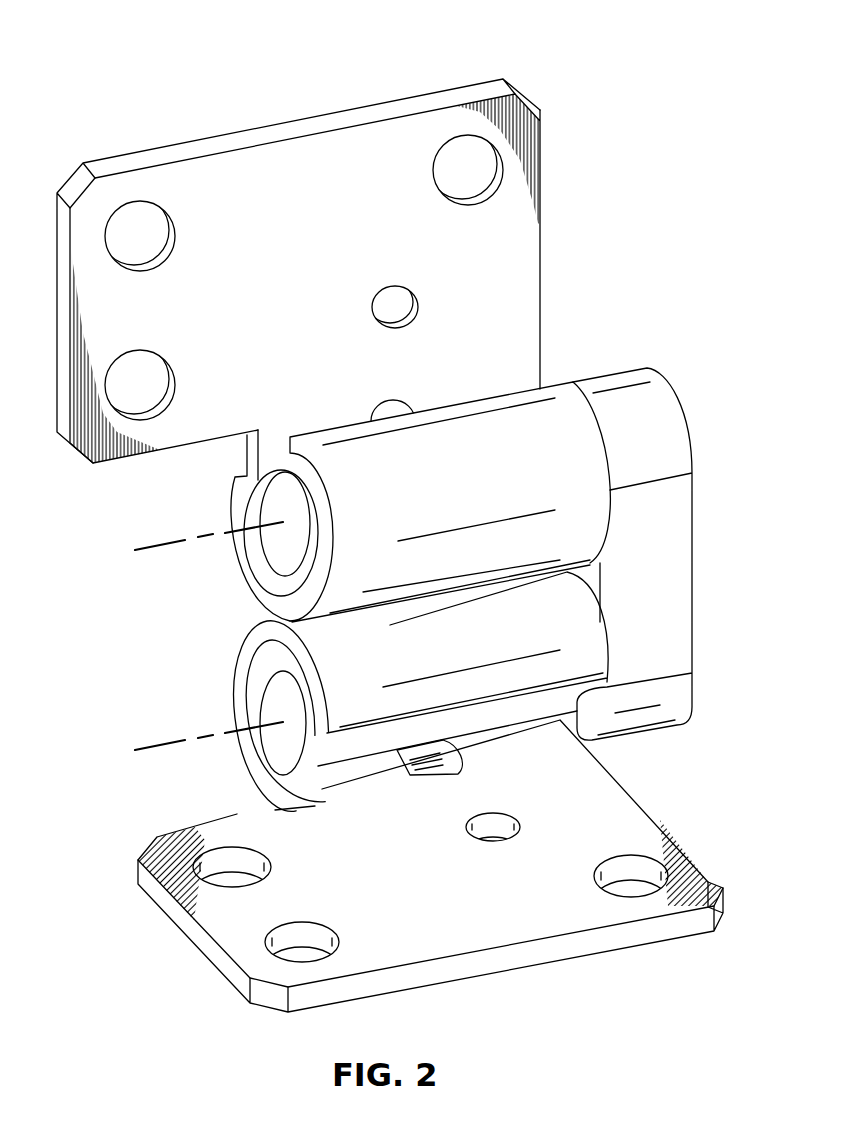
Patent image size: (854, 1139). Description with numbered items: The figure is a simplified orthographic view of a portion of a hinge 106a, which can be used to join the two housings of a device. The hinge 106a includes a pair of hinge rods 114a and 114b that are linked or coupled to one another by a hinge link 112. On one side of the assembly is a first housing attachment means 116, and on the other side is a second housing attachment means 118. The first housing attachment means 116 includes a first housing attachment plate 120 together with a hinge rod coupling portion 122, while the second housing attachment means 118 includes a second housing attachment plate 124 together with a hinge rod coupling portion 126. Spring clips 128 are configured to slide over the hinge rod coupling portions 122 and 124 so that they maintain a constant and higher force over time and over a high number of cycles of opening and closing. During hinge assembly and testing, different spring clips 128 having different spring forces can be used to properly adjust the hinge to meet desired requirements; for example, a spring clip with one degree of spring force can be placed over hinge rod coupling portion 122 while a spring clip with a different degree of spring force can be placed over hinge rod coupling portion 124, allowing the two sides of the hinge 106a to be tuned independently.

The hinge assembly 106a is at (96, 57).
The hinge body 112 is at (683, 565).
The first axis 114a is at (147, 549).
The second axis 114b is at (147, 749).
The first leaf 116 is at (189, 124).
The second leaf 118 is at (577, 970).
The first plate portion 120 is at (273, 170).
The first knuckle 122 is at (265, 558).
The second plate portion 124 is at (428, 930).
The second knuckle 126 is at (253, 685).
The bushing 128 is at (488, 437).